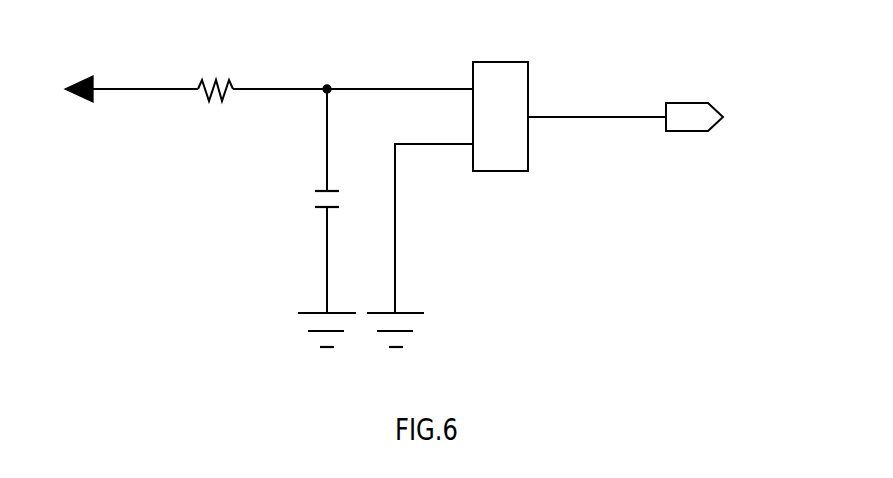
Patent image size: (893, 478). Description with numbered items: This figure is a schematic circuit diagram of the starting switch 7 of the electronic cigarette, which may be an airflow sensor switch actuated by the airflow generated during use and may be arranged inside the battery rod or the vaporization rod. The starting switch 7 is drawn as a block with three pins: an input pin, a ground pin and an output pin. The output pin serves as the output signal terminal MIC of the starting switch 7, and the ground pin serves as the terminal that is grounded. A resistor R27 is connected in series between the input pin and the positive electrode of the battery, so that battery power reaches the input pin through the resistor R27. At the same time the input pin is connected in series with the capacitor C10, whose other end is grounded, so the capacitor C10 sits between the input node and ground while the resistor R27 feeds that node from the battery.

The resistor R27 is at (335, 65).
The capacitor C10 is at (312, 216).
The starting switch 7 is at (460, 204).
The output signal terminal MIC is at (650, 117).